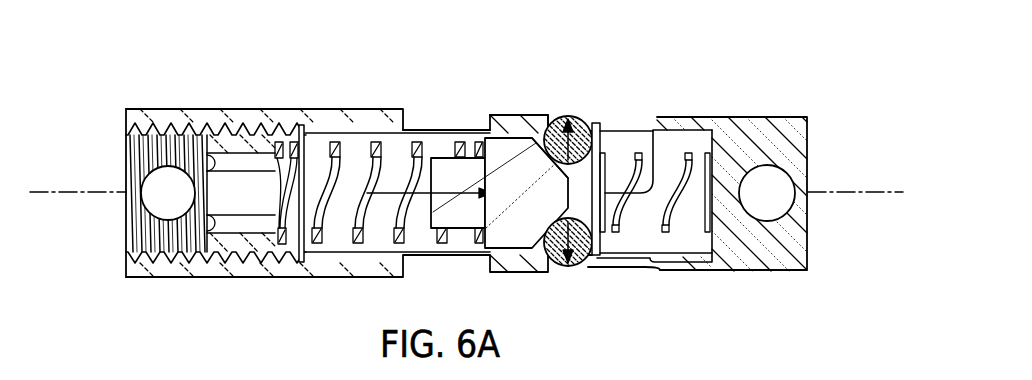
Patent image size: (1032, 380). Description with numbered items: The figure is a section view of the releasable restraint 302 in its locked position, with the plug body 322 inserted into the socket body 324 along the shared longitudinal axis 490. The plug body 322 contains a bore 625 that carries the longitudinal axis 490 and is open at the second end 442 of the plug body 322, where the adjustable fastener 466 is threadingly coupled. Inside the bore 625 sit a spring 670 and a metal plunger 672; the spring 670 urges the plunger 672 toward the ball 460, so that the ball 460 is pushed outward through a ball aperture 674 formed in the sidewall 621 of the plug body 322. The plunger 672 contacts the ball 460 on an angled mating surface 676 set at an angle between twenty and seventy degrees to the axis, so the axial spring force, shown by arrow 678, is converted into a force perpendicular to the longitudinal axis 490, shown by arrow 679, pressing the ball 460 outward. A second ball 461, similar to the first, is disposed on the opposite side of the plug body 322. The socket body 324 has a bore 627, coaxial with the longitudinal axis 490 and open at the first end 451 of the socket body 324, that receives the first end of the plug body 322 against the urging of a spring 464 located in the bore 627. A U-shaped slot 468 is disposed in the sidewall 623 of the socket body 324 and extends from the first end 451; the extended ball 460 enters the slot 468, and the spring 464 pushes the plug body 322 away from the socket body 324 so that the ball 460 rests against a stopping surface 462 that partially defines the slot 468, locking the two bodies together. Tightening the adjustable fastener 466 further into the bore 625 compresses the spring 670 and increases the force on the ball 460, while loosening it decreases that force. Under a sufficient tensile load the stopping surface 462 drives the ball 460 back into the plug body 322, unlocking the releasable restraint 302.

The releasable restraint 302 is at (854, 100).
The plug body 322 is at (303, 122).
The socket body 324 is at (744, 120).
The second end 442 is at (106, 117).
The first end 451 is at (473, 114).
The ball 460 is at (572, 128).
The second ball 461 is at (583, 262).
The stopping surface 462 is at (555, 128).
The spring 464 is at (672, 226).
The adjustable fastener 466 is at (238, 210).
The slot 468 is at (655, 127).
The longitudinal axis 490 is at (870, 193).
The sidewall 621 is at (420, 258).
The sidewall 623 is at (679, 266).
The bore 625 is at (356, 145).
The bore 627 is at (704, 130).
The spring 670 is at (335, 228).
The plunger 672 is at (508, 235).
The ball aperture 674 is at (596, 128).
The mating surface 676 is at (536, 132).
The arrow 678 is at (460, 190).
The arrow 679 is at (608, 126).